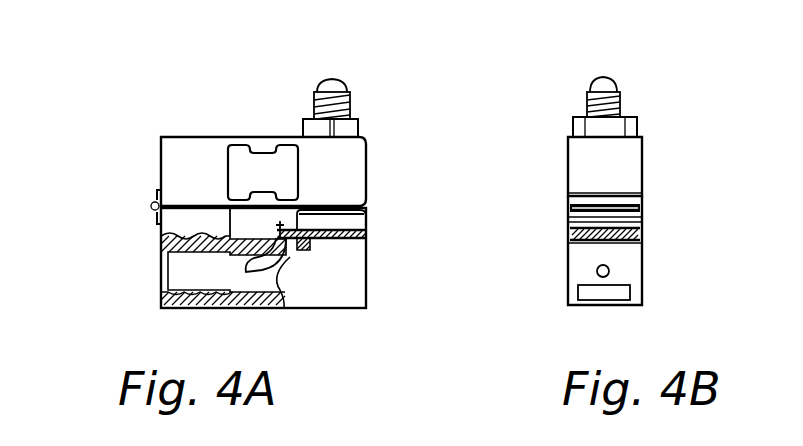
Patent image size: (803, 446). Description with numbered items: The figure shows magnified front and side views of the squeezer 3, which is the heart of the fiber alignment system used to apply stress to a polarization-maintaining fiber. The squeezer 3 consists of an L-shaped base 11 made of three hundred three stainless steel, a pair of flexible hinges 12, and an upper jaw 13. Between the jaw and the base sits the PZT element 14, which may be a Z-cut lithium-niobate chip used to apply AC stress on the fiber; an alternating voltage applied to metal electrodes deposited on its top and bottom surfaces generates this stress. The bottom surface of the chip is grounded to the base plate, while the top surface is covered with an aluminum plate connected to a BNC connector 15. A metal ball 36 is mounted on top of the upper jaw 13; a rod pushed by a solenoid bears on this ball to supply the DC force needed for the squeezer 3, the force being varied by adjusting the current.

In FIG. 4A, the squeezer 3 is at (383, 176).
In FIG. 4B, the squeezer 3 is at (553, 170).
In FIG. 4A, the base 11 is at (367, 290).
In FIG. 4B, the base 11 is at (642, 270).
In FIG. 4A, the flexible hinges 12 is at (151, 205).
In FIG. 4A, the upper jaw 13 is at (366, 147).
In FIG. 4B, the upper jaw 13 is at (642, 156).
In FIG. 4A, the PZT element 14 is at (367, 232).
In FIG. 4B, the PZT element 14 is at (642, 233).
In FIG. 4A, the BNC connector 15 is at (284, 300).
In FIG. 4A, the metal ball 36 is at (336, 77).